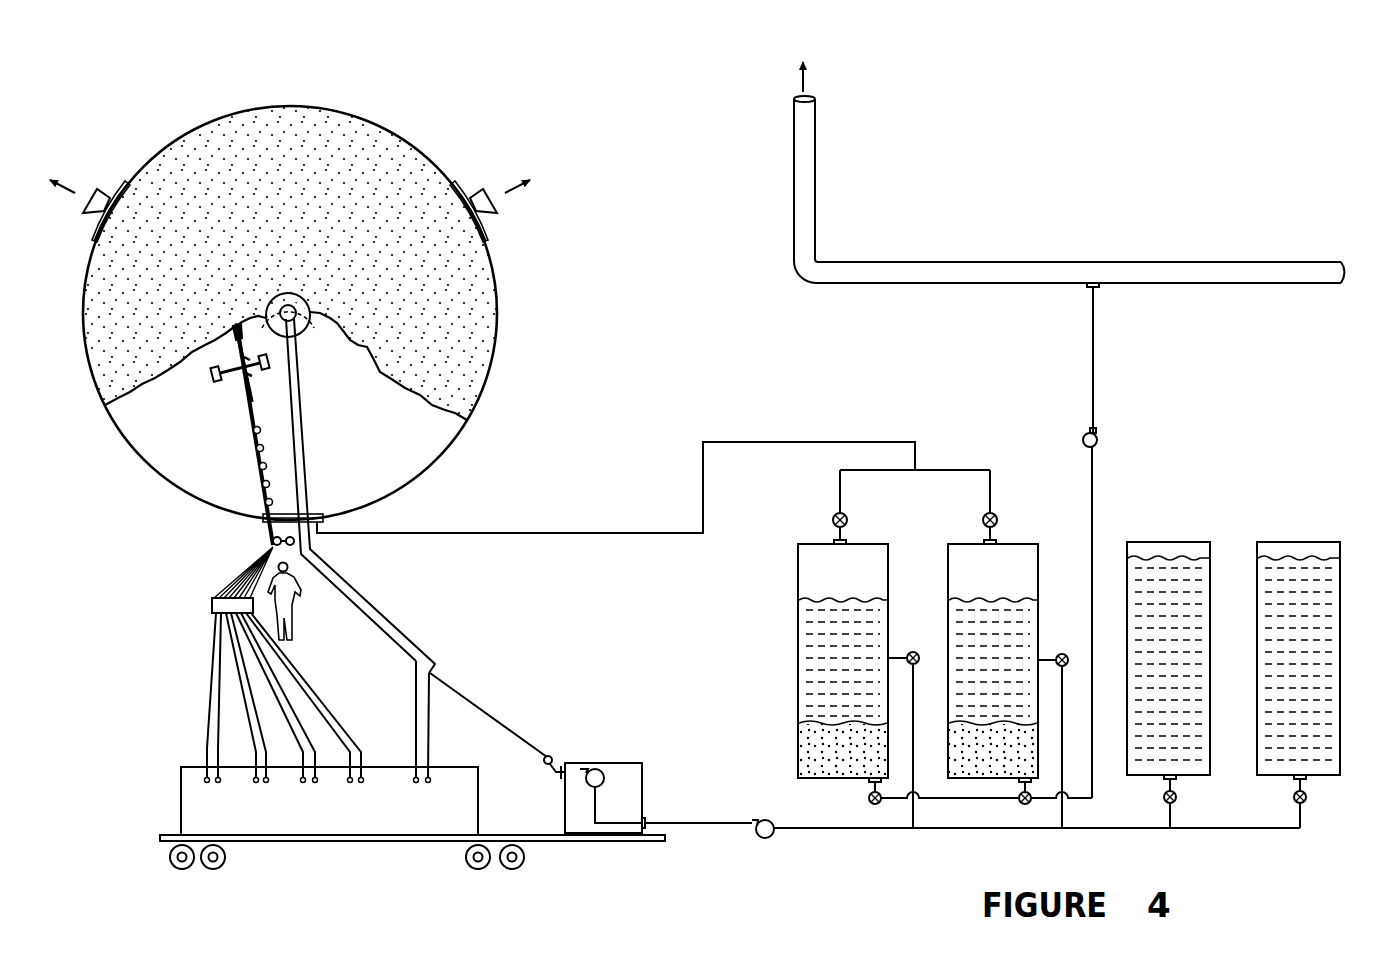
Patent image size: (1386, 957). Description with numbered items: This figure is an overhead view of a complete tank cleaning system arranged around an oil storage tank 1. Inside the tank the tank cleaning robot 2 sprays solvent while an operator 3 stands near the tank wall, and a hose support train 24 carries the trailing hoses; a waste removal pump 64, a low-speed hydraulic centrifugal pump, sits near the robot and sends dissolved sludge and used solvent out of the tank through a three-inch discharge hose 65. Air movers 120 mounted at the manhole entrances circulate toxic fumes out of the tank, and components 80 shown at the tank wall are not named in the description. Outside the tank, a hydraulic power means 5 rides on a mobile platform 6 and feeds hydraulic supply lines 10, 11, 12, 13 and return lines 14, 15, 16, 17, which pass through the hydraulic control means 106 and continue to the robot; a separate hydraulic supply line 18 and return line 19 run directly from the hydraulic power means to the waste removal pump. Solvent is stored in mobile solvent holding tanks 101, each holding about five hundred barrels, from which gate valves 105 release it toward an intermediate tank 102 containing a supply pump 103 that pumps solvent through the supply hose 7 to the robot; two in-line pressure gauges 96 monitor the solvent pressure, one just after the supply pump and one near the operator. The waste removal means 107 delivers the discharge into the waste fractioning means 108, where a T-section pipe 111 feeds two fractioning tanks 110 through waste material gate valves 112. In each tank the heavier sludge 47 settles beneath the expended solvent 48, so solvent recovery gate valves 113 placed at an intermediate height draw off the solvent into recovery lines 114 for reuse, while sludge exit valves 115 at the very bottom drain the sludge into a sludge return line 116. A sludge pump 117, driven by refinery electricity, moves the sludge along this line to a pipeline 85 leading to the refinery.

The oil storage tank 1 is at (490, 400).
The tank cleaning robot 2 is at (229, 395).
The operator 3 is at (290, 615).
The hydraulic power means 5 is at (176, 800).
The mobile platform 6 is at (632, 842).
The supply hose 7 is at (462, 697).
The hydraulic supply line 10 is at (211, 648).
The hydraulic supply line 11 is at (235, 672).
The hydraulic supply line 12 is at (272, 698).
The hydraulic supply line 13 is at (300, 732).
The hydraulic return line 14 is at (219, 757).
The hydraulic return line 15 is at (266, 756).
The hydraulic return line 16 is at (311, 756).
The hydraulic return line 17 is at (333, 725).
The waste removal pump hydraulic supply line 18 is at (412, 738).
The waste removal pump hydraulic return line 19 is at (431, 749).
The hose support train 24 is at (245, 468).
The sludge 47 is at (830, 752).
The expended solvent 48 is at (820, 690).
The waste removal pump 64 is at (305, 330).
The discharge hose 65 is at (310, 443).
The mounting bracket 80 is at (97, 231).
The pipeline 85 is at (928, 262).
The in-line pressure gauge 96 is at (270, 538).
The mobile solvent holding tank 101 is at (1170, 542).
The intermediate tank 102 is at (645, 770).
The supply pump 103 is at (600, 768).
The gate valve 105 is at (1177, 801).
The hydraulic control means 106 is at (212, 606).
The waste removal means 107 is at (523, 527).
The waste fractioning means 108 is at (866, 661).
The fractioning tank 110 is at (798, 572).
The T-section pipe 111 is at (918, 468).
The waste material gate valve 112 is at (847, 515).
The solvent recovery gate valve 113 is at (928, 622).
The recovery line 114 is at (915, 813).
The sludge exit valve 115 is at (869, 803).
The sludge return line 116 is at (1095, 512).
The sludge pump 117 is at (1098, 437).
The air mover 120 is at (108, 194).